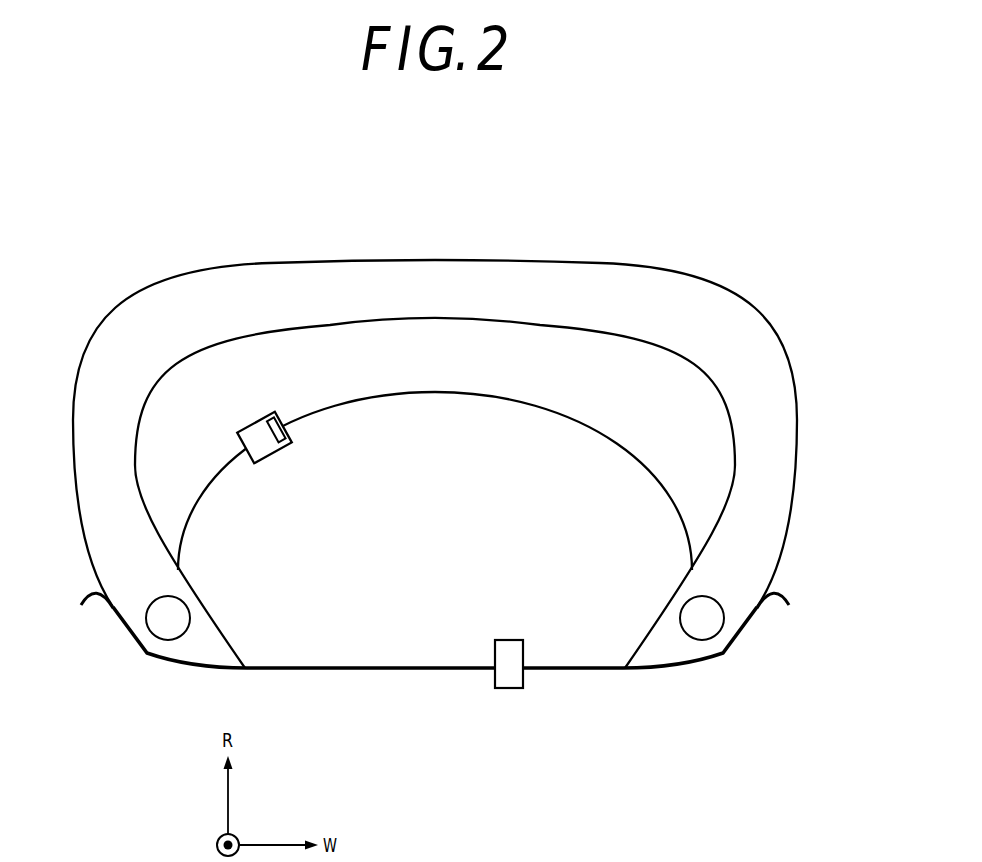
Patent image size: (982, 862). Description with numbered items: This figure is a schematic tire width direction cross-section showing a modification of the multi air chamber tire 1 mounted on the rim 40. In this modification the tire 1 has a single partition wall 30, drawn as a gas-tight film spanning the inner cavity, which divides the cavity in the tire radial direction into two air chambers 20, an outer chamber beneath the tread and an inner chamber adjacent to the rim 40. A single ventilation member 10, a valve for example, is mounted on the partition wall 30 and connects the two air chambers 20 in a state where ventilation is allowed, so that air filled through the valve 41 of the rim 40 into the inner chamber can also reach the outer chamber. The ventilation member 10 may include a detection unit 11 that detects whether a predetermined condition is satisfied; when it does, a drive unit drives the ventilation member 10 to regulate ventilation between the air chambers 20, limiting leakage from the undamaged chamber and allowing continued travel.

The multi air chamber tire 1 is at (435, 460).
The ventilation member 10 is at (271, 445).
The detection unit 11 is at (288, 432).
The air chamber 20 is at (465, 370).
The partition wall 30 is at (537, 407).
The rim 40 is at (383, 670).
The valve 41 is at (512, 680).